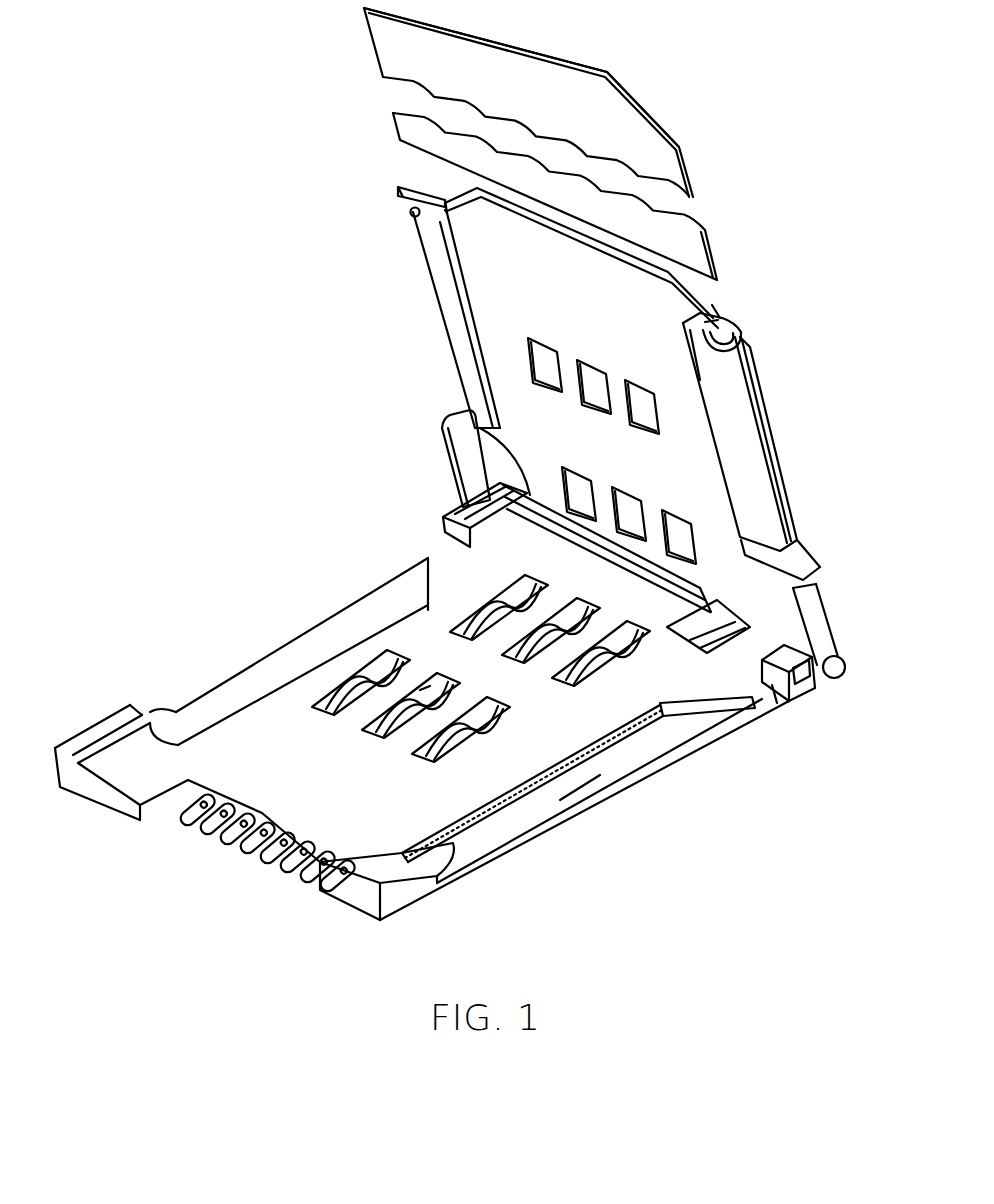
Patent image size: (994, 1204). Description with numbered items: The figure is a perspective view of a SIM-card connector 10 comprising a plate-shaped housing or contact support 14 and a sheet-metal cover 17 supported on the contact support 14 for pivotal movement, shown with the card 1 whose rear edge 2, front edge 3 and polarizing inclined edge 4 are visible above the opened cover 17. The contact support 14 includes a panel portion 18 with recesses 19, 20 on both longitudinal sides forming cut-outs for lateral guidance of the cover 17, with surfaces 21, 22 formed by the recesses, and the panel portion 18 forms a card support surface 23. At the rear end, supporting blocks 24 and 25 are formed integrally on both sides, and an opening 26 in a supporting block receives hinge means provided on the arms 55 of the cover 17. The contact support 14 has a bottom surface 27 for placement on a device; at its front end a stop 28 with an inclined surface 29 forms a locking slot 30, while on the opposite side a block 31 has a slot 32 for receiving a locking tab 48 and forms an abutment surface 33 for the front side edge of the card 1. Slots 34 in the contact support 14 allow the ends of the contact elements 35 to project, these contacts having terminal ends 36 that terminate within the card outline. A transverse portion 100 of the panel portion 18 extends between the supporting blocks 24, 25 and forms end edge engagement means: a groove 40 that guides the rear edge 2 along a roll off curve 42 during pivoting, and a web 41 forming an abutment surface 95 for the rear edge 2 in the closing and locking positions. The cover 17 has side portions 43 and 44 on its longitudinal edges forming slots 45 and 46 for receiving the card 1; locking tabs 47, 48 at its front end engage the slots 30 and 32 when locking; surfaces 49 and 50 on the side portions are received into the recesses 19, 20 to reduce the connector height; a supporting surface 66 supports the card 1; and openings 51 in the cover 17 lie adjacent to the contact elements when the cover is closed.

The card 1 is at (553, 144).
The rear edge 2 is at (555, 222).
The front edge 3 is at (547, 58).
The inclined edge 4 is at (645, 110).
The SIM-card connector 10 is at (370, 362).
The contact support 14 is at (469, 723).
The cover 17 is at (715, 305).
The panel portion 18 is at (740, 684).
The recess 19 is at (693, 710).
The recess 20 is at (469, 703).
The surface 21 is at (600, 770).
The surface 22 is at (258, 677).
The card support surface 23 is at (528, 762).
The supporting block 24 is at (800, 697).
The supporting block 25 is at (445, 527).
The opening 26 is at (820, 690).
The bottom surface 27 is at (505, 853).
The stop 28 is at (370, 862).
The inclined surface 29 is at (380, 852).
The locking slot 30 is at (455, 880).
The block 31 is at (98, 727).
The slot 32 is at (178, 700).
The abutment surface 33 is at (150, 700).
The slots 34 is at (645, 618).
The contact elements 35 is at (410, 690).
The terminal ends 36 is at (190, 820).
The groove 40 is at (600, 407).
The web 41 is at (535, 510).
The roll off curve 42 is at (745, 605).
The side portion 43 is at (727, 432).
The side portion 44 is at (419, 282).
The slot 45 is at (735, 325).
The slot 46 is at (425, 205).
The locking tab 47 is at (718, 320).
The locking tab 48 is at (395, 195).
The surface 49 is at (700, 378).
The surface 50 is at (453, 300).
The openings 51 is at (545, 345).
The arms 55 is at (460, 462).
The supporting surface 66 is at (450, 237).
The abutment surface 95 is at (607, 563).
The transverse portion 100 is at (568, 543).